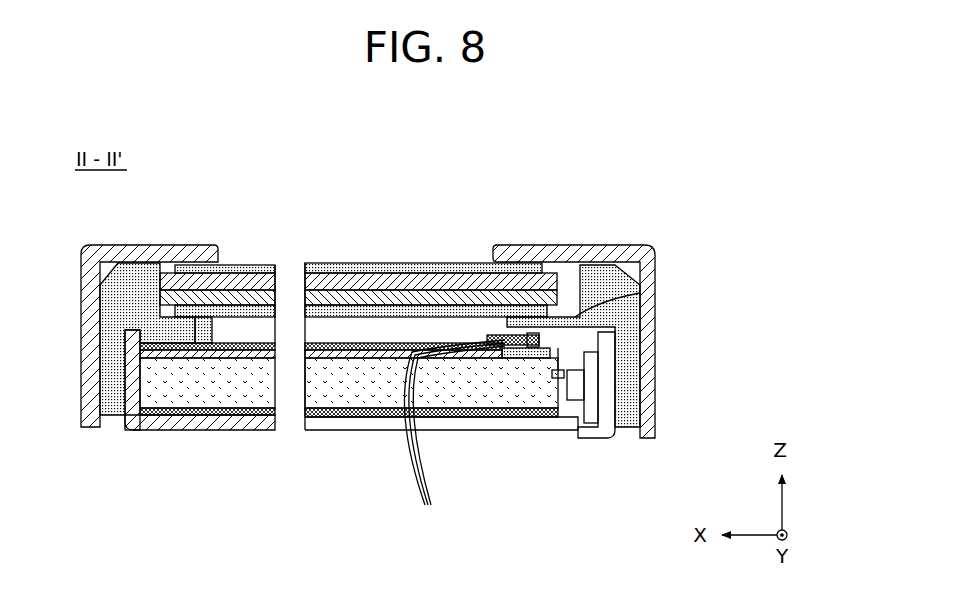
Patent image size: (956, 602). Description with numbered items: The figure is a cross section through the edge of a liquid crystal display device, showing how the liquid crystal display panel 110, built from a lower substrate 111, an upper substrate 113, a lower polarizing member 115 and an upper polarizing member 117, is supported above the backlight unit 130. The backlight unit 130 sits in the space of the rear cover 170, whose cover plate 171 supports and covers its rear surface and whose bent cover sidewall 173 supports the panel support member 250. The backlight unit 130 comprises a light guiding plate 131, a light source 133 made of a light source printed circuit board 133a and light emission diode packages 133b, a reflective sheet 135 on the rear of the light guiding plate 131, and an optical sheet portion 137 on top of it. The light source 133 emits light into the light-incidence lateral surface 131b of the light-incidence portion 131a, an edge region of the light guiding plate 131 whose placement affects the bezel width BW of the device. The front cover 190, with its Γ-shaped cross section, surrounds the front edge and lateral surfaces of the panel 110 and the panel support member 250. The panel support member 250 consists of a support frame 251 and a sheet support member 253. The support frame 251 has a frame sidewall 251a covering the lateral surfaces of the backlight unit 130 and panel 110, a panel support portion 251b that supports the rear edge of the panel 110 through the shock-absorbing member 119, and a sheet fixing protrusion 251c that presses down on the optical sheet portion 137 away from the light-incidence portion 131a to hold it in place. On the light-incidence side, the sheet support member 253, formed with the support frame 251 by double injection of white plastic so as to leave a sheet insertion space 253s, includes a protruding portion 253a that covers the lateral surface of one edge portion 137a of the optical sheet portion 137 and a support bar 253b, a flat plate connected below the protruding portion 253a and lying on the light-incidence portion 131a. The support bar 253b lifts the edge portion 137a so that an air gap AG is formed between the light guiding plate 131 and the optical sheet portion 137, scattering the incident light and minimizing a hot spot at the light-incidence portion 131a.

The liquid crystal display panel 110 is at (358, 298).
The lower substrate 111 is at (350, 280).
The upper substrate 113 is at (385, 298).
The lower polarizing member 115 is at (312, 265).
The upper polarizing member 117 is at (312, 204).
The shock-absorbing member 119 is at (200, 325).
The backlight unit 130 is at (354, 447).
The light guiding plate 131 is at (370, 395).
The light-incidence portion 131a is at (567, 230).
The light-incidence lateral surface 131b is at (545, 435).
The light source 133 is at (563, 439).
The light source printed circuit board 133a is at (590, 423).
The light emission diode packages 133b is at (575, 400).
The reflective sheet 135 is at (320, 428).
The optical sheet portion 137 is at (454, 433).
The one edge portion of the optical sheet portion 137a is at (505, 345).
The rear cover 170 is at (184, 436).
The cover plate 171 is at (112, 506).
The cover sidewall 173 is at (130, 430).
The front cover 190 is at (650, 253).
The panel support member 250 is at (776, 293).
The support frame 251 is at (640, 343).
The frame sidewall 251a is at (630, 333).
The panel support portion 251b is at (623, 293).
The sheet fixing protrusion 251c is at (212, 337).
The sheet support member 253 is at (633, 361).
The protruding portion 253a is at (545, 340).
The sheet insertion space 253s is at (560, 362).
The support bar 253b is at (556, 376).
The air gap AG is at (482, 340).
The bezel width BW is at (655, 245).